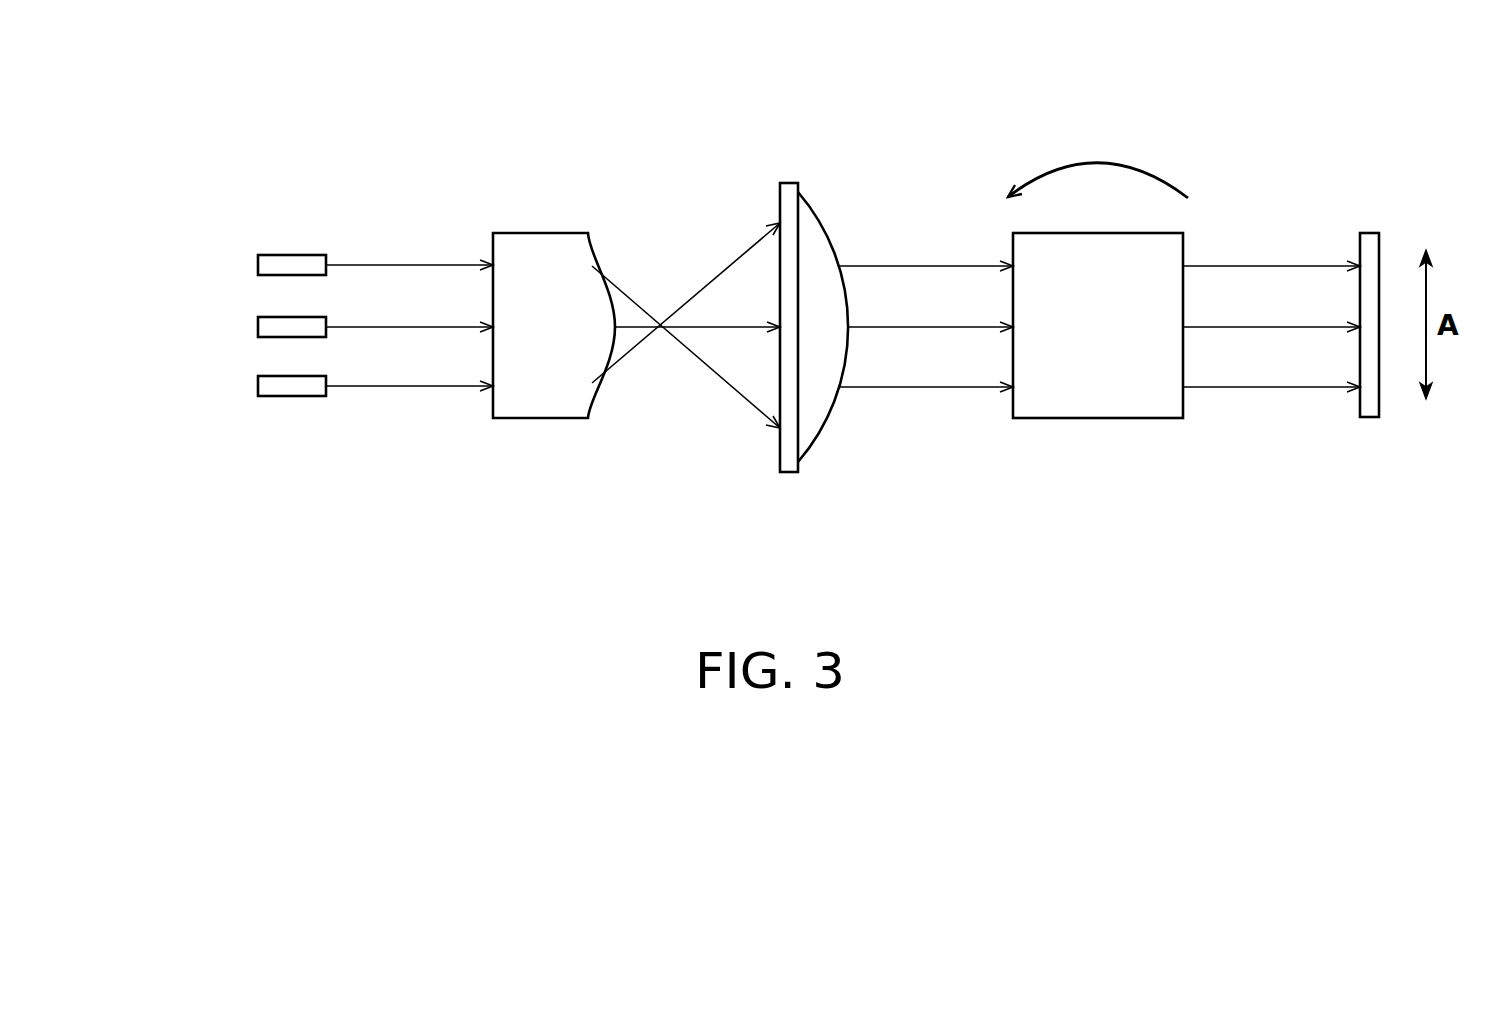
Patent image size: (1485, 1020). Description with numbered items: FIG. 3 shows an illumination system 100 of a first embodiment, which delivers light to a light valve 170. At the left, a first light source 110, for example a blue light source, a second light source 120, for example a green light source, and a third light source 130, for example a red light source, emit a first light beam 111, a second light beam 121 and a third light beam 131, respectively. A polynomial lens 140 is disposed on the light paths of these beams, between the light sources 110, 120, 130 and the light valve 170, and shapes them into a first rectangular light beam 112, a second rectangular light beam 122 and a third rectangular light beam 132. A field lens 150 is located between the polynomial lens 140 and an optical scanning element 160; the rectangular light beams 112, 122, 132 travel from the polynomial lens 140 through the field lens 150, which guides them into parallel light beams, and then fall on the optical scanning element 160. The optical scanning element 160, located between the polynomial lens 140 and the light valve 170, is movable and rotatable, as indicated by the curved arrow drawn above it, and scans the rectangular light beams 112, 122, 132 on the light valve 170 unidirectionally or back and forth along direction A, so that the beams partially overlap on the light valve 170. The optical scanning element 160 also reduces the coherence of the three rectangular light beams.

The illumination system 100 is at (204, 108).
The first light source 110 is at (258, 386).
The second light source 120 is at (258, 327).
The third light source 130 is at (258, 265).
The first light beam 111 is at (368, 386).
The second light beam 121 is at (368, 327).
The third light beam 131 is at (368, 265).
The first rectangular light beam 112 is at (623, 357).
The second rectangular light beam 122 is at (712, 327).
The third rectangular light beam 132 is at (728, 385).
The polynomial lens 140 is at (540, 418).
The field lens 150 is at (790, 472).
The optical scanning element 160 is at (1098, 418).
The light valve 170 is at (1372, 417).